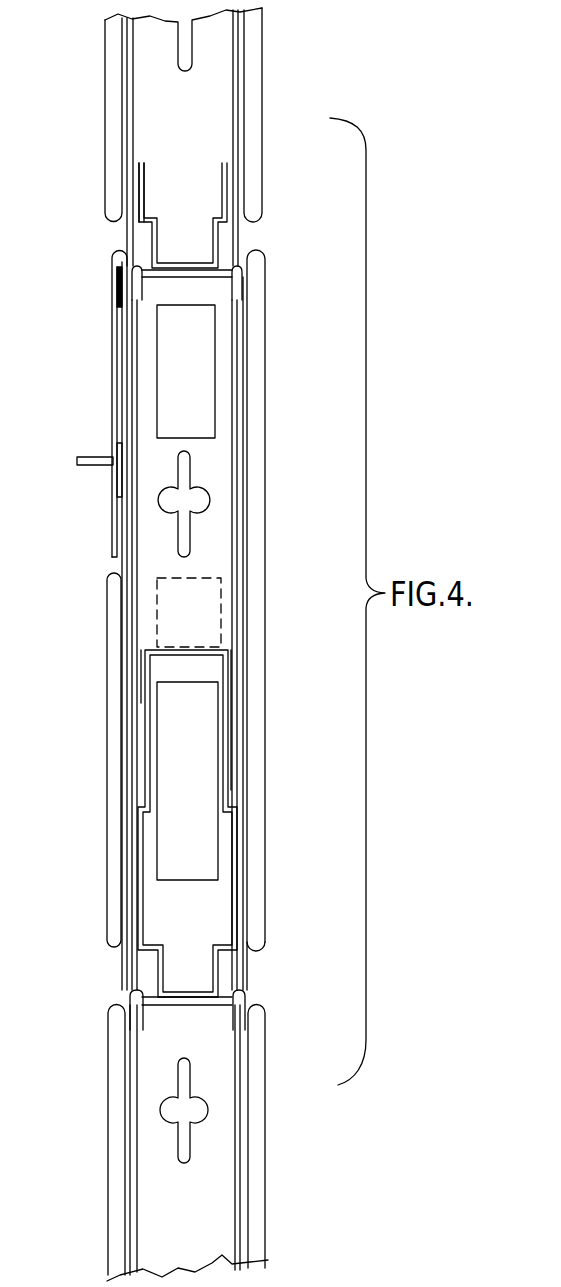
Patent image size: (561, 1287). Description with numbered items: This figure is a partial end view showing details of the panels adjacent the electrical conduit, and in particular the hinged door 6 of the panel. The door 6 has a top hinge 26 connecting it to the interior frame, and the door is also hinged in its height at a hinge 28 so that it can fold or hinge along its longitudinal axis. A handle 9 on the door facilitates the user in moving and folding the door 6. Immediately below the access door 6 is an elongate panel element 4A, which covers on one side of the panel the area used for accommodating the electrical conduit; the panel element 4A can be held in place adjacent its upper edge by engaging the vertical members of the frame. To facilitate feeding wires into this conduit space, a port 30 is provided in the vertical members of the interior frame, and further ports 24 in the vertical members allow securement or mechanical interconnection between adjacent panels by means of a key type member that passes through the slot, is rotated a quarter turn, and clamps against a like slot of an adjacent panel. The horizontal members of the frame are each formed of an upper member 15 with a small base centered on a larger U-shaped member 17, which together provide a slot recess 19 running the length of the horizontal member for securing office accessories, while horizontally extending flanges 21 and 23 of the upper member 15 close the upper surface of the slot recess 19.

The elongate panel element 4A is at (108, 793).
The hinged door 6 is at (100, 343).
The handle 9 is at (82, 467).
The upper member 15 is at (160, 258).
The U-shaped member 17 is at (218, 283).
The slot recess 19 is at (143, 250).
The horizontally extending flange 21 is at (232, 240).
The horizontally extending flange 23 is at (147, 250).
The port 24 is at (192, 1132).
The top hinge 26 is at (117, 278).
The hinge 28 is at (112, 413).
The port 30 is at (217, 842).